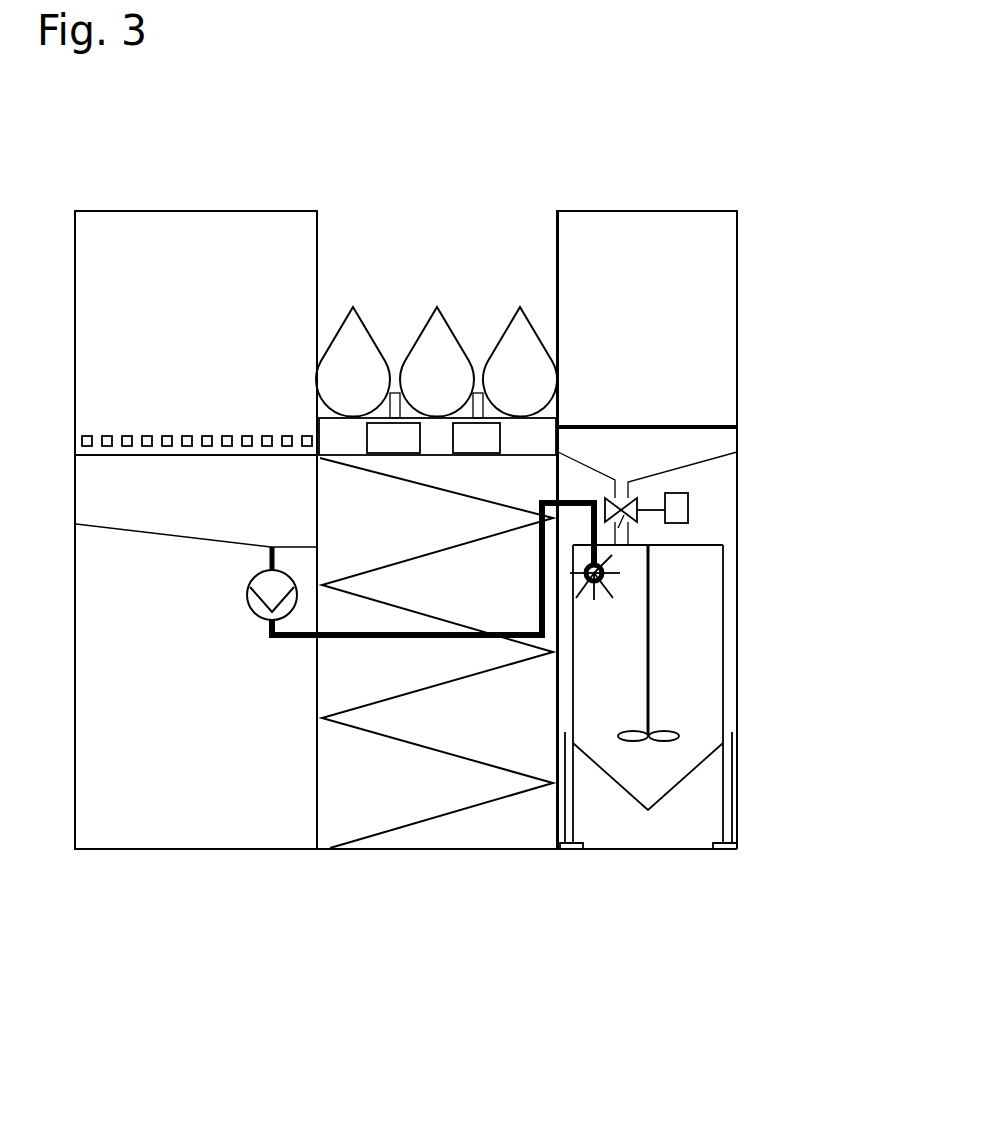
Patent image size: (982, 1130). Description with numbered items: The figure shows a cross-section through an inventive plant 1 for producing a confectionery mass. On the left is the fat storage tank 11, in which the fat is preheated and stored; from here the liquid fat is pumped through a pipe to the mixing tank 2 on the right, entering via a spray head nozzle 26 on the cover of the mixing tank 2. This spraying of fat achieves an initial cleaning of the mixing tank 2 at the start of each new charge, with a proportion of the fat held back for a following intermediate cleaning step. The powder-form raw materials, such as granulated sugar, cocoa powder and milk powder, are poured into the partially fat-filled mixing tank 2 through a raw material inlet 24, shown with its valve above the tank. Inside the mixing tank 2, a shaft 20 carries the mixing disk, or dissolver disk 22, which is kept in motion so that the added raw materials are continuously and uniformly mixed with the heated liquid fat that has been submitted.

The plant 1 is at (155, 908).
The fat storage tank 11 is at (190, 729).
The mixing tank 2 is at (622, 680).
The agitator shaft 20 is at (648, 630).
The dissolver disk 22 is at (683, 738).
The raw material inlet 24 is at (630, 501).
The spray head nozzle 26 is at (601, 557).